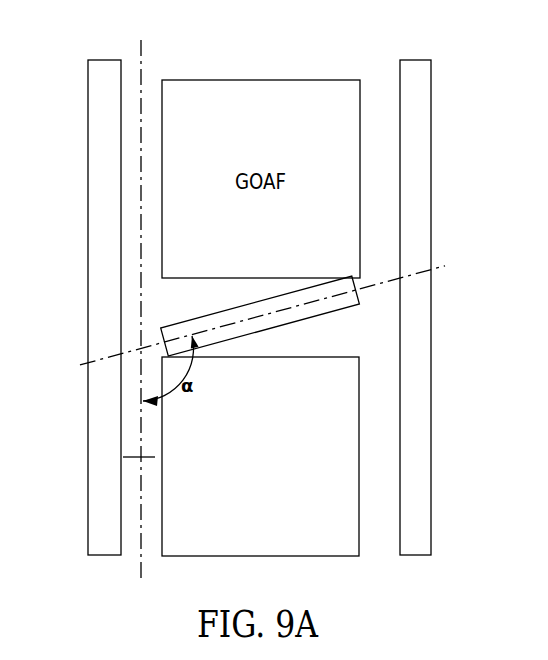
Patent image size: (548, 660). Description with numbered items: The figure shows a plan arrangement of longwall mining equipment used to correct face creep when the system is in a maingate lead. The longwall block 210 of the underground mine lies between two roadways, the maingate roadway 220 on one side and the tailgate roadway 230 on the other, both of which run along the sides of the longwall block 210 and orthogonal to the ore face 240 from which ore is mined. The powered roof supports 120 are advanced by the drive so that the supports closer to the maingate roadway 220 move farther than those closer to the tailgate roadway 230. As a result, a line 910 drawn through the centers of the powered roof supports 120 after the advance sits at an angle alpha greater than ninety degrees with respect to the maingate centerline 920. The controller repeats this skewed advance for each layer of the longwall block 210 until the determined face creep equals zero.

The powered roof supports 120 is at (163, 338).
The longwall block 210 is at (279, 495).
The maingate roadway 220 is at (129, 56).
The tailgate roadway 230 is at (380, 53).
The ore face 240 is at (162, 489).
The line through centers of powered roof supports 910 is at (372, 291).
The maingate centerline 920 is at (140, 530).